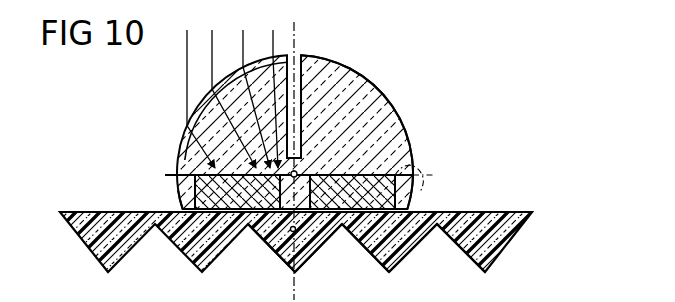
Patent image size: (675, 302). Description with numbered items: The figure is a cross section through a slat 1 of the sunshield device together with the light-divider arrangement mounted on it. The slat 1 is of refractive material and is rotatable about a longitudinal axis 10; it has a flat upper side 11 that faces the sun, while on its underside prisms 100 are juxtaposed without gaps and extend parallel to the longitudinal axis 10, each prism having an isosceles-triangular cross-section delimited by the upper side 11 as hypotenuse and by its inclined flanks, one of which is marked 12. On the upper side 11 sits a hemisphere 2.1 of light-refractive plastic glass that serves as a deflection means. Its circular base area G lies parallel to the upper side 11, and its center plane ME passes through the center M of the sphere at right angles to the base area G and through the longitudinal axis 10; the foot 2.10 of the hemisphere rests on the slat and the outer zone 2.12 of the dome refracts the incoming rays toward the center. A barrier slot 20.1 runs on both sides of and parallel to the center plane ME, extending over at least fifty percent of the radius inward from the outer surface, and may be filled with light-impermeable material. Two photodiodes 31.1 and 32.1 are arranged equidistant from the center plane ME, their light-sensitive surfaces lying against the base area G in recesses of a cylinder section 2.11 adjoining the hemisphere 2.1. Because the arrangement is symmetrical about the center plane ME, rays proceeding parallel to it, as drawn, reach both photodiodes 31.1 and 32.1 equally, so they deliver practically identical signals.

The slat 1 is at (173, 251).
The longitudinal axis 10 is at (290, 231).
The upper side 11 is at (456, 212).
The groove flank 12 is at (348, 238).
The prisms 100 is at (467, 241).
The hemisphere 2.1 is at (366, 82).
The lens foot 2.10 is at (180, 193).
The cylinder section 2.11 is at (396, 114).
The lens coating layer 2.12 is at (201, 101).
The barrier slot 20.1 is at (303, 54).
The photodiode 31.1 is at (408, 156).
The photodiode 32.1 is at (184, 160).
The center of the sphere M is at (298, 172).
The center plane ME is at (301, 152).
The base area G is at (421, 174).